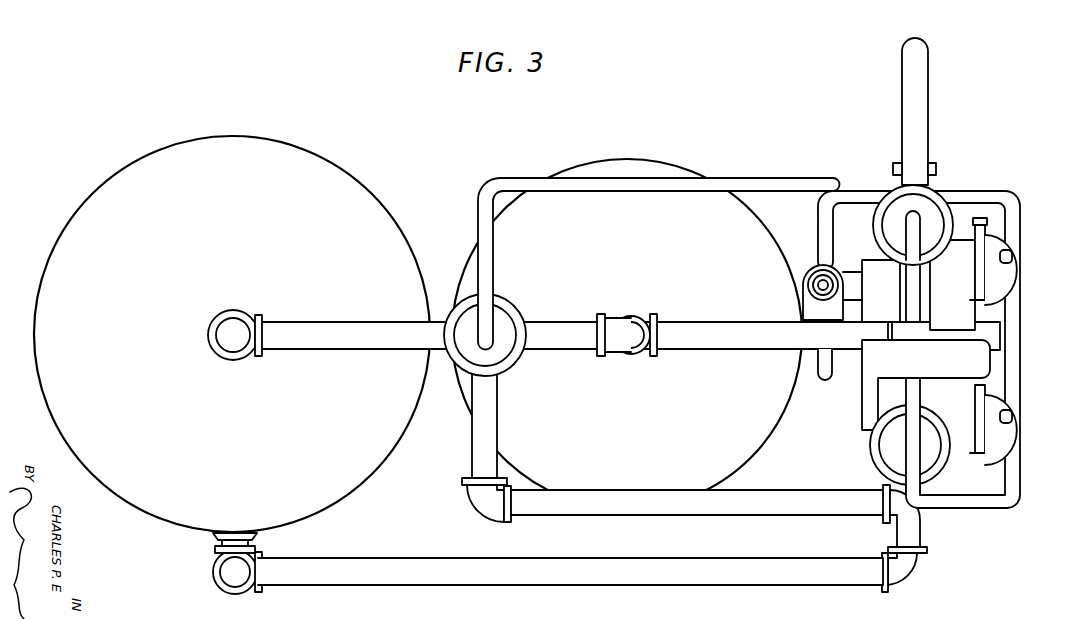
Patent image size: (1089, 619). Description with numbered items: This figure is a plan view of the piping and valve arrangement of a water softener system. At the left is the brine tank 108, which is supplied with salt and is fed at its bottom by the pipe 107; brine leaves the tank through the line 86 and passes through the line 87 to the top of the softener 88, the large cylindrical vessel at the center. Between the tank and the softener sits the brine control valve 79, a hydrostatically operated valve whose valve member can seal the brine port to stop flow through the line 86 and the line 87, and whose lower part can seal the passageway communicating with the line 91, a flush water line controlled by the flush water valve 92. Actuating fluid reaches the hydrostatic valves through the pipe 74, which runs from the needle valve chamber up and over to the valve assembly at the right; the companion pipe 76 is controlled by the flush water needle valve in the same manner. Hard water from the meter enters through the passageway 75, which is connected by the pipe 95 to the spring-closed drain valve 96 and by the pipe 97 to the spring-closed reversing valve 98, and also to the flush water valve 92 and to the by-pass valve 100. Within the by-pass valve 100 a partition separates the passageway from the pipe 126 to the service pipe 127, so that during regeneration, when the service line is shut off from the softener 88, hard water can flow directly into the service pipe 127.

The pipe 74 is at (782, 178).
The passageway 75 is at (1018, 355).
The pipe 76 is at (816, 262).
The brine control valve 79 is at (512, 318).
The line 86 is at (345, 326).
The line 87 is at (576, 326).
The softener 88 is at (634, 162).
The line 91 is at (497, 418).
The flush water valve 92 is at (933, 462).
The pipe 95 is at (1012, 286).
The drain valve 96 is at (984, 212).
The pipe 97 is at (1012, 440).
The reversing valve 98 is at (980, 460).
The by-pass valve 100 is at (940, 205).
The pipe 107 is at (735, 587).
The brine tank 108 is at (331, 158).
The pipe 126 is at (770, 326).
The service pipe 127 is at (915, 120).